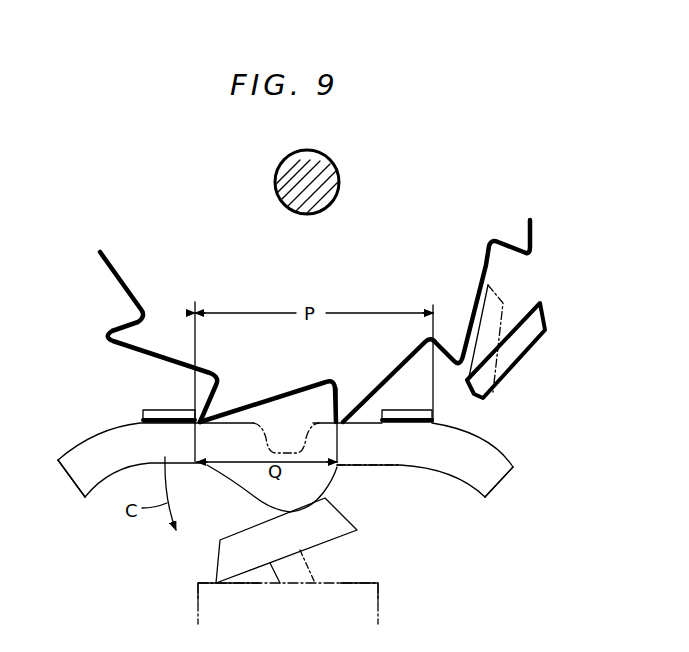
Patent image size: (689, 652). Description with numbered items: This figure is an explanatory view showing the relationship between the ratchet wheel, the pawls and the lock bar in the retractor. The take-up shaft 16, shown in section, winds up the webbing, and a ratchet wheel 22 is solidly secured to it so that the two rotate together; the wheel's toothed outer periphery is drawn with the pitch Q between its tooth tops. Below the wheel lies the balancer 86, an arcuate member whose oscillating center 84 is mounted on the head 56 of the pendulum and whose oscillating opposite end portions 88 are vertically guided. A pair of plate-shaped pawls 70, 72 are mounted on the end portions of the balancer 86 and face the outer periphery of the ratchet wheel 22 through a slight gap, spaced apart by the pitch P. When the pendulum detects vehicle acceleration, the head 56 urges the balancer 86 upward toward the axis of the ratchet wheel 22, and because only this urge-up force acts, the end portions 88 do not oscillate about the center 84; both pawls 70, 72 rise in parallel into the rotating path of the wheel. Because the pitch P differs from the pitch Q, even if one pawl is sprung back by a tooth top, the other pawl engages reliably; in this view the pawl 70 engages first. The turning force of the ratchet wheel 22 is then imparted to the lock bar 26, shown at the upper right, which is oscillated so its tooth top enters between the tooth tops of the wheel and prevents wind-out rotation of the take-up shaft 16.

The take-up shaft 16 is at (321, 203).
The ratchet wheel 22 is at (488, 268).
The lock bar 26 is at (503, 307).
The head of the pendulum 56 is at (353, 522).
The plate-shaped pawl 70 is at (162, 408).
The plate-shaped pawl 72 is at (408, 409).
The oscillating center 84 is at (270, 500).
The balancer 86 is at (492, 441).
The oscillating opposite end portions 88 is at (64, 473).